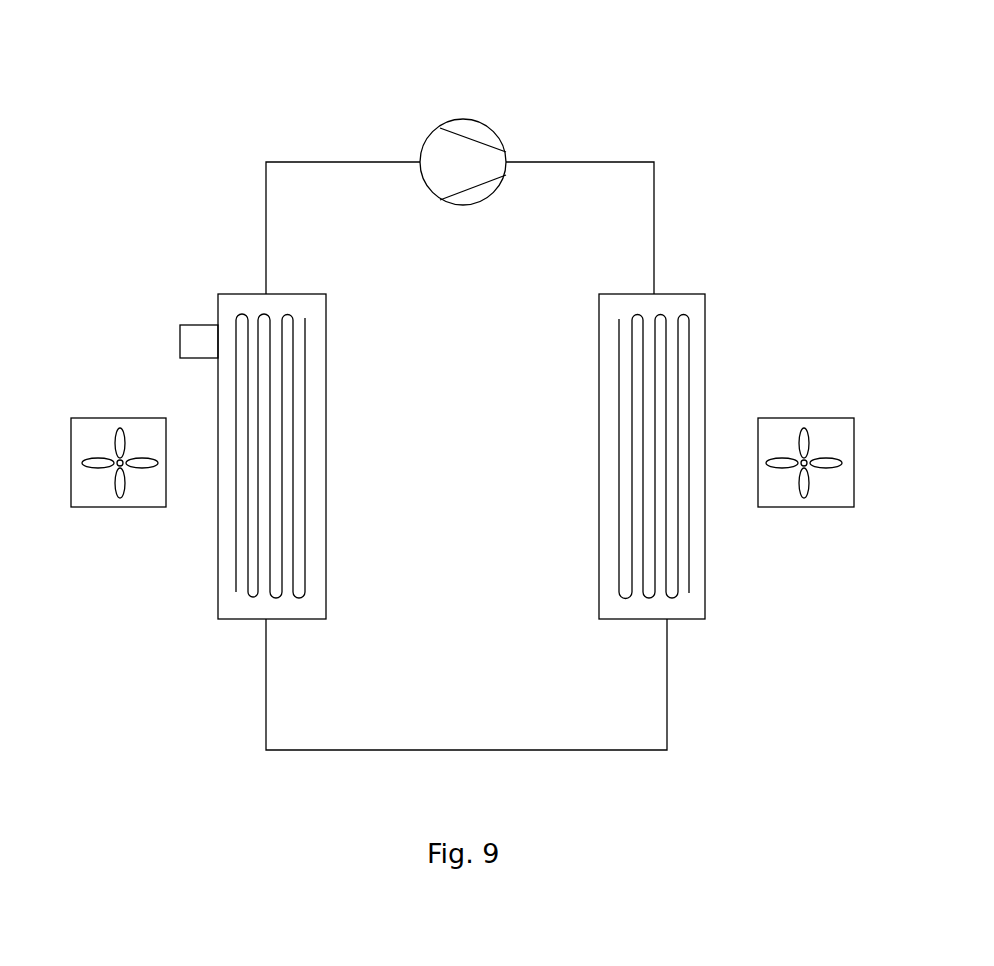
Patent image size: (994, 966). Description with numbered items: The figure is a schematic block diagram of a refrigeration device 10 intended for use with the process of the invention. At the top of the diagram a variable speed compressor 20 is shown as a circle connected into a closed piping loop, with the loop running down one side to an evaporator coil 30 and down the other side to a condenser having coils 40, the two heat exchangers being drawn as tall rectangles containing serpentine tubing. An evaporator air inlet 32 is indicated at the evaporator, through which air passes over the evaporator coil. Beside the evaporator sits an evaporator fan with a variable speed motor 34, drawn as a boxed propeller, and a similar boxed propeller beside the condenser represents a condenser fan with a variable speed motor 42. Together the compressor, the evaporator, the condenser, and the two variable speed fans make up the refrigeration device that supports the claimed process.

The refrigeration device 10 is at (160, 109).
The variable speed compressor 20 is at (435, 150).
The evaporator coil 30 is at (223, 417).
The evaporator air inlet 32 is at (293, 430).
The evaporator fan with a variable speed motor 34 is at (192, 345).
The condenser having coils 40 is at (667, 308).
The condenser fan with a variable speed motor 42 is at (819, 434).